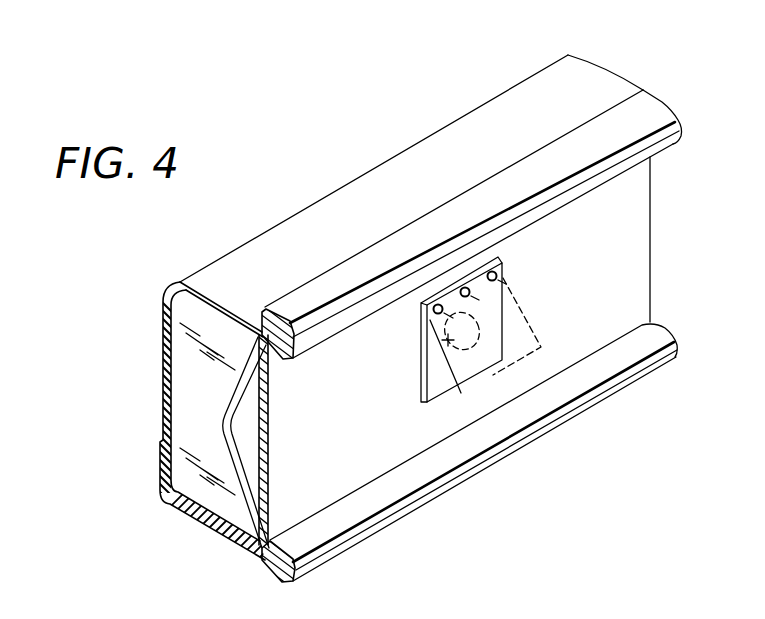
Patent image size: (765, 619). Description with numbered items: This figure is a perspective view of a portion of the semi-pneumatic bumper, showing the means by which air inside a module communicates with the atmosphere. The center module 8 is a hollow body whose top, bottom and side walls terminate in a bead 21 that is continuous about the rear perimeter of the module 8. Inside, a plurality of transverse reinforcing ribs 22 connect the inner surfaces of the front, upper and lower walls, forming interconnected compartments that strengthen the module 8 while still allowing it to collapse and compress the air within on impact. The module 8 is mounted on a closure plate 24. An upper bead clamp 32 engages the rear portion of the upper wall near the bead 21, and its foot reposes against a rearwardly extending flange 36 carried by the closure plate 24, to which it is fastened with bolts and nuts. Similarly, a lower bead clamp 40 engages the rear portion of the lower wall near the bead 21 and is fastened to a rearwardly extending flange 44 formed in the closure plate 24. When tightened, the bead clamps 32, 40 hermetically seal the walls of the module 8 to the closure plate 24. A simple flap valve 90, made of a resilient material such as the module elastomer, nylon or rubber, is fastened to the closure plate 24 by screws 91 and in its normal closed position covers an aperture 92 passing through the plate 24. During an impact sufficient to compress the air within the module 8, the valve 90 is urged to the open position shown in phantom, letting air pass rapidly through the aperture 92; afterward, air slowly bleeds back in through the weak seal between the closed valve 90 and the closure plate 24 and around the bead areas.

The center module 8 is at (144, 464).
The bead 21 is at (268, 313).
The reinforcing ribs 22 is at (206, 419).
The closure plate 24 is at (318, 471).
The upper bead clamp 32 is at (460, 200).
The rearwardly extending flange 36 is at (273, 358).
The lower bead clamp 40 is at (299, 572).
The rearwardly extending flange 44 is at (345, 512).
The flap valve 90 is at (432, 390).
The screws 91 is at (497, 276).
The aperture 92 is at (430, 340).